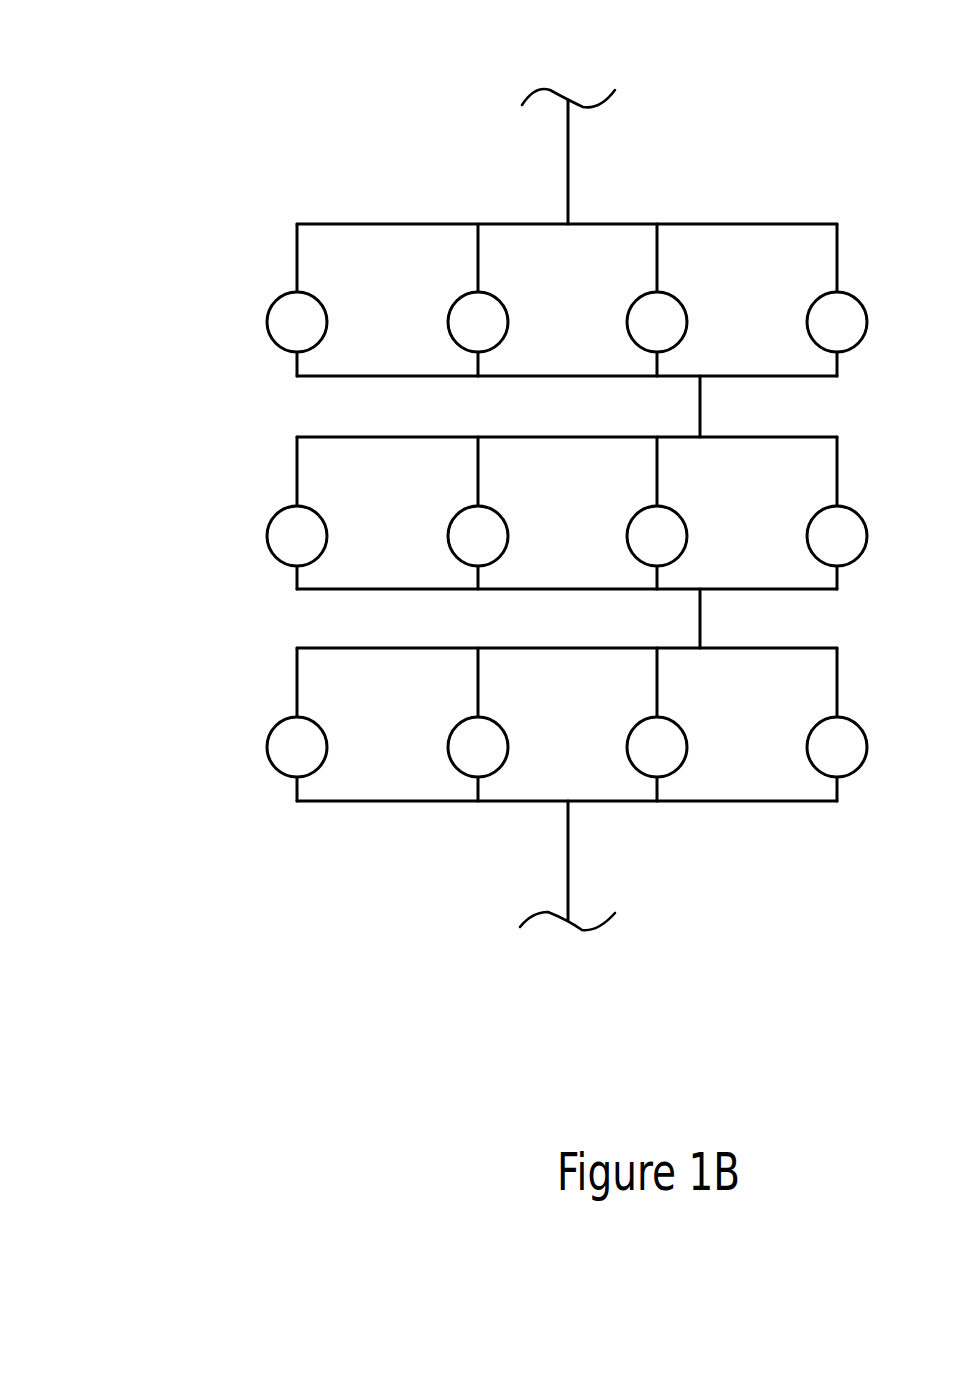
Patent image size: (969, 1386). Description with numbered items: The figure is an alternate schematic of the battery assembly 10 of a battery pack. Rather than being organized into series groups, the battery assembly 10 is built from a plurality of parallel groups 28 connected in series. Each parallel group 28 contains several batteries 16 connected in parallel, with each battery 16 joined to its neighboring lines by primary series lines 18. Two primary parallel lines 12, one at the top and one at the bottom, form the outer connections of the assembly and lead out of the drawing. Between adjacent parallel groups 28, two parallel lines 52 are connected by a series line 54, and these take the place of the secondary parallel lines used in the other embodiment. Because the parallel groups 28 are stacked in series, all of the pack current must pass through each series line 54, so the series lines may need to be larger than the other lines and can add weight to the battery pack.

The battery assembly 10 is at (465, 468).
The primary parallel line 12 is at (410, 223).
The battery 16 is at (807, 323).
The primary series line 18 is at (297, 258).
The parallel group 28 is at (465, 529).
The parallel line 52 is at (542, 375).
The series line 54 is at (700, 407).